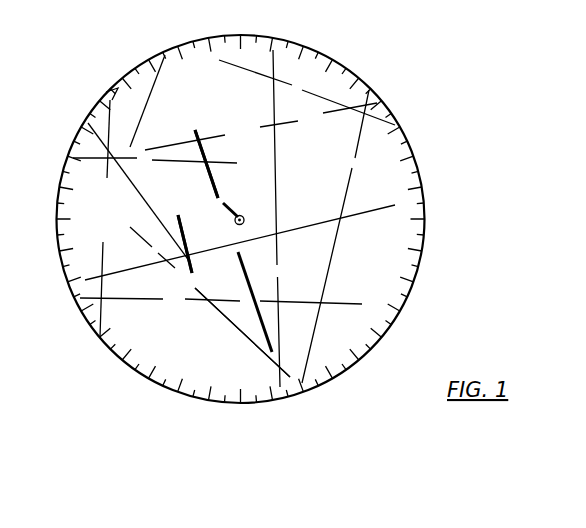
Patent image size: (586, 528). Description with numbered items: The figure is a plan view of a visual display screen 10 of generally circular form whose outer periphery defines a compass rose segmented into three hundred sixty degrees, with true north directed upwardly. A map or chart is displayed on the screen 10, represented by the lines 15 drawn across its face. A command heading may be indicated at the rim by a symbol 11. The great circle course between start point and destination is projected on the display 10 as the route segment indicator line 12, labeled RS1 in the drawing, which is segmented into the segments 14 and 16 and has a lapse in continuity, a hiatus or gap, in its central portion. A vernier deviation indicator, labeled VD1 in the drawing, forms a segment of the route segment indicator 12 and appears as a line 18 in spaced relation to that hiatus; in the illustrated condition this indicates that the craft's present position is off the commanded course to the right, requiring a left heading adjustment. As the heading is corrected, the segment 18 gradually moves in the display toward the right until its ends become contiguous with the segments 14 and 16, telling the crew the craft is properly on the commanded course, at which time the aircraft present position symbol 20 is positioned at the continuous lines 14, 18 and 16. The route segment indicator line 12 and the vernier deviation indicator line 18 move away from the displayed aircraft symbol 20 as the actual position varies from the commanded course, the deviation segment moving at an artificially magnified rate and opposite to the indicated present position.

The visual display screen 10 is at (410, 292).
The command heading symbol 11 is at (111, 90).
The route segment indicator line 12 is at (248, 280).
The route segment indicator segment 14 is at (252, 297).
The map or chart lines 15 is at (298, 121).
The route segment indicator segment 16 is at (212, 178).
The vernier deviation indicator segment 18 is at (181, 270).
The aircraft present position symbol 20 is at (244, 215).
The route segment indicator RS1 is at (216, 165).
The vernier deviation indicator VD1 is at (177, 213).